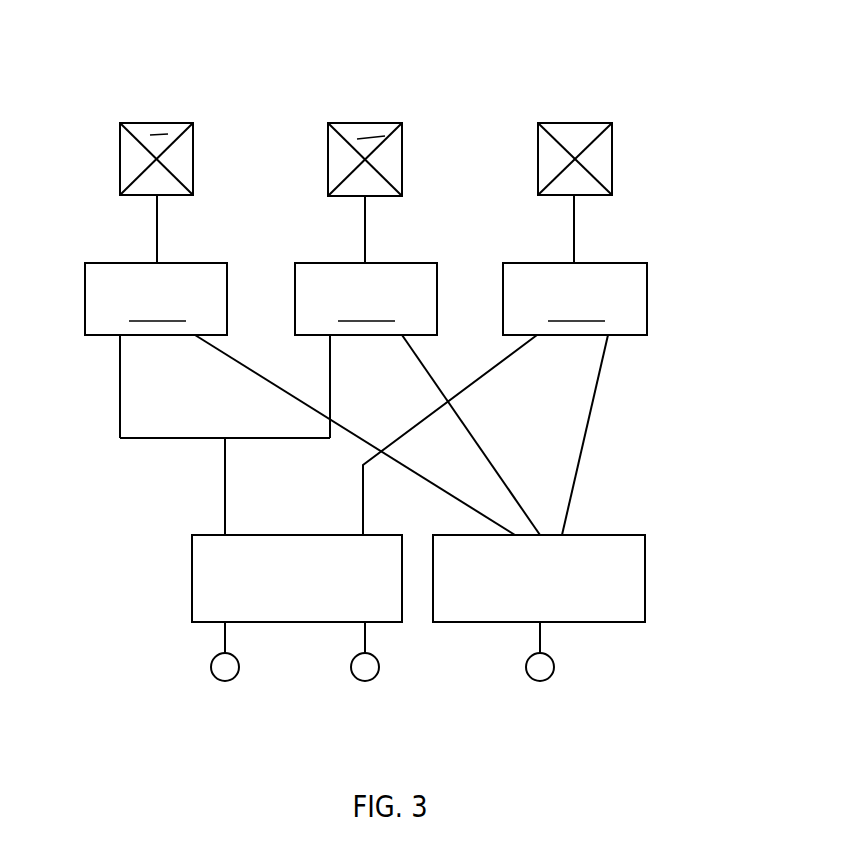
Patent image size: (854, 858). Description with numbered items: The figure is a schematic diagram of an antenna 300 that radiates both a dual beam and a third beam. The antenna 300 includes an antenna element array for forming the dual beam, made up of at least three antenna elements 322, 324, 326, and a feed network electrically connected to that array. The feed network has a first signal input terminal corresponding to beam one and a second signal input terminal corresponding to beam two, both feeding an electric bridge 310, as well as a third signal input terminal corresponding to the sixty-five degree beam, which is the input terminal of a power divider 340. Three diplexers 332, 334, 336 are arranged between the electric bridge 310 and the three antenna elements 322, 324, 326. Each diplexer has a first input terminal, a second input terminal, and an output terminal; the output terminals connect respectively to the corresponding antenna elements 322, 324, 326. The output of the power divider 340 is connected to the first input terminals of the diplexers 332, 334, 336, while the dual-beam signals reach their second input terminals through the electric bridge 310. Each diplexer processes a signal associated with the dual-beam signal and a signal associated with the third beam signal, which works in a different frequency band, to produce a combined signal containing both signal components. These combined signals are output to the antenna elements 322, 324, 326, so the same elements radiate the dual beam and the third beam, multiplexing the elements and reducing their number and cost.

The antenna 300 is at (466, 100).
The electric bridge 310 is at (220, 585).
The antenna element 322 is at (191, 128).
The antenna element 324 is at (400, 129).
The antenna element 326 is at (590, 160).
The diplexer 332 is at (300, 399).
The diplexer 334 is at (417, 399).
The diplexer 336 is at (505, 399).
The power divider 340 is at (612, 583).